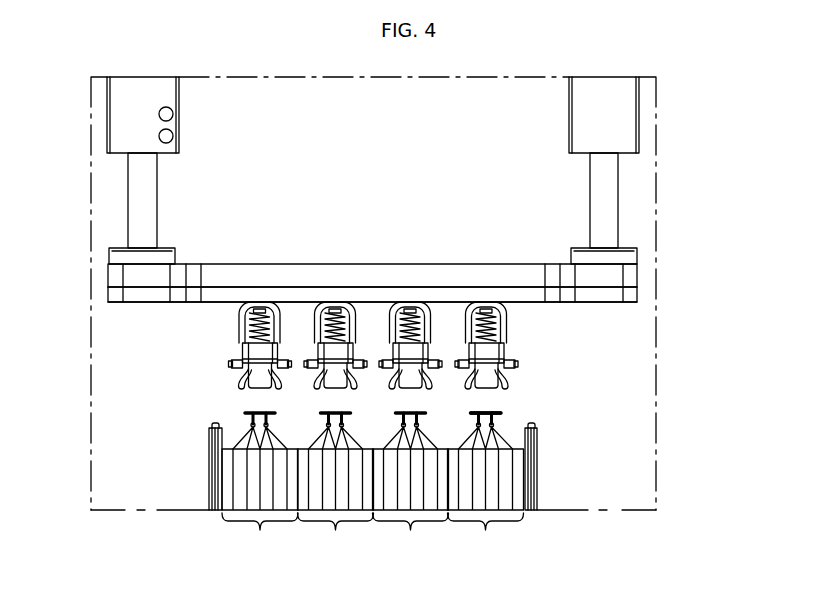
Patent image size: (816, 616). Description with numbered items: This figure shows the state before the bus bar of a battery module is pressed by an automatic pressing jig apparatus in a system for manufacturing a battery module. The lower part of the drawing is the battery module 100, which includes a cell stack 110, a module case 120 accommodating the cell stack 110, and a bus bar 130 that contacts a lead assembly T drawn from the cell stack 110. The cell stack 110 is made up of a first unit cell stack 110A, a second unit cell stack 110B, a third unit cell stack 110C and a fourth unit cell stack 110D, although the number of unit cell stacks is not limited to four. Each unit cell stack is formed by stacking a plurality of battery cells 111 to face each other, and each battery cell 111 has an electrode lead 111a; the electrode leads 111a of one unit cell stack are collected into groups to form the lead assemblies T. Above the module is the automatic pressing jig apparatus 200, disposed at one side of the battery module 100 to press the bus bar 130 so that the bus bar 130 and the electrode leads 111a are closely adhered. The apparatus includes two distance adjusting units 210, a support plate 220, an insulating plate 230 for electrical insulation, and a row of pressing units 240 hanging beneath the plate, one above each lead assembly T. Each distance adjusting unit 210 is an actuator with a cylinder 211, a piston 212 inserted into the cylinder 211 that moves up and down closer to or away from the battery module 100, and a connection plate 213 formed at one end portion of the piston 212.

The battery module 100 is at (373, 506).
The cell stack 110 is at (373, 525).
The first unit cell stack 110A is at (260, 503).
The second unit cell stack 110B is at (336, 503).
The third unit cell stack 110C is at (411, 503).
The fourth unit cell stack 110D is at (486, 503).
The battery cell 111 is at (551, 465).
The electrode lead 111a is at (535, 433).
The module case 120 is at (209, 470).
The bus bar 130 is at (472, 413).
The lead assembly T is at (502, 413).
The automatic pressing jig apparatus 200 is at (657, 272).
The distance adjusting unit 210 is at (373, 170).
The cylinder 211 is at (569, 112).
The piston 212 is at (590, 196).
The connection plate 213 is at (571, 252).
The support plate 220 is at (220, 264).
The insulating plate 230 is at (205, 302).
The pressing unit 240 is at (527, 342).